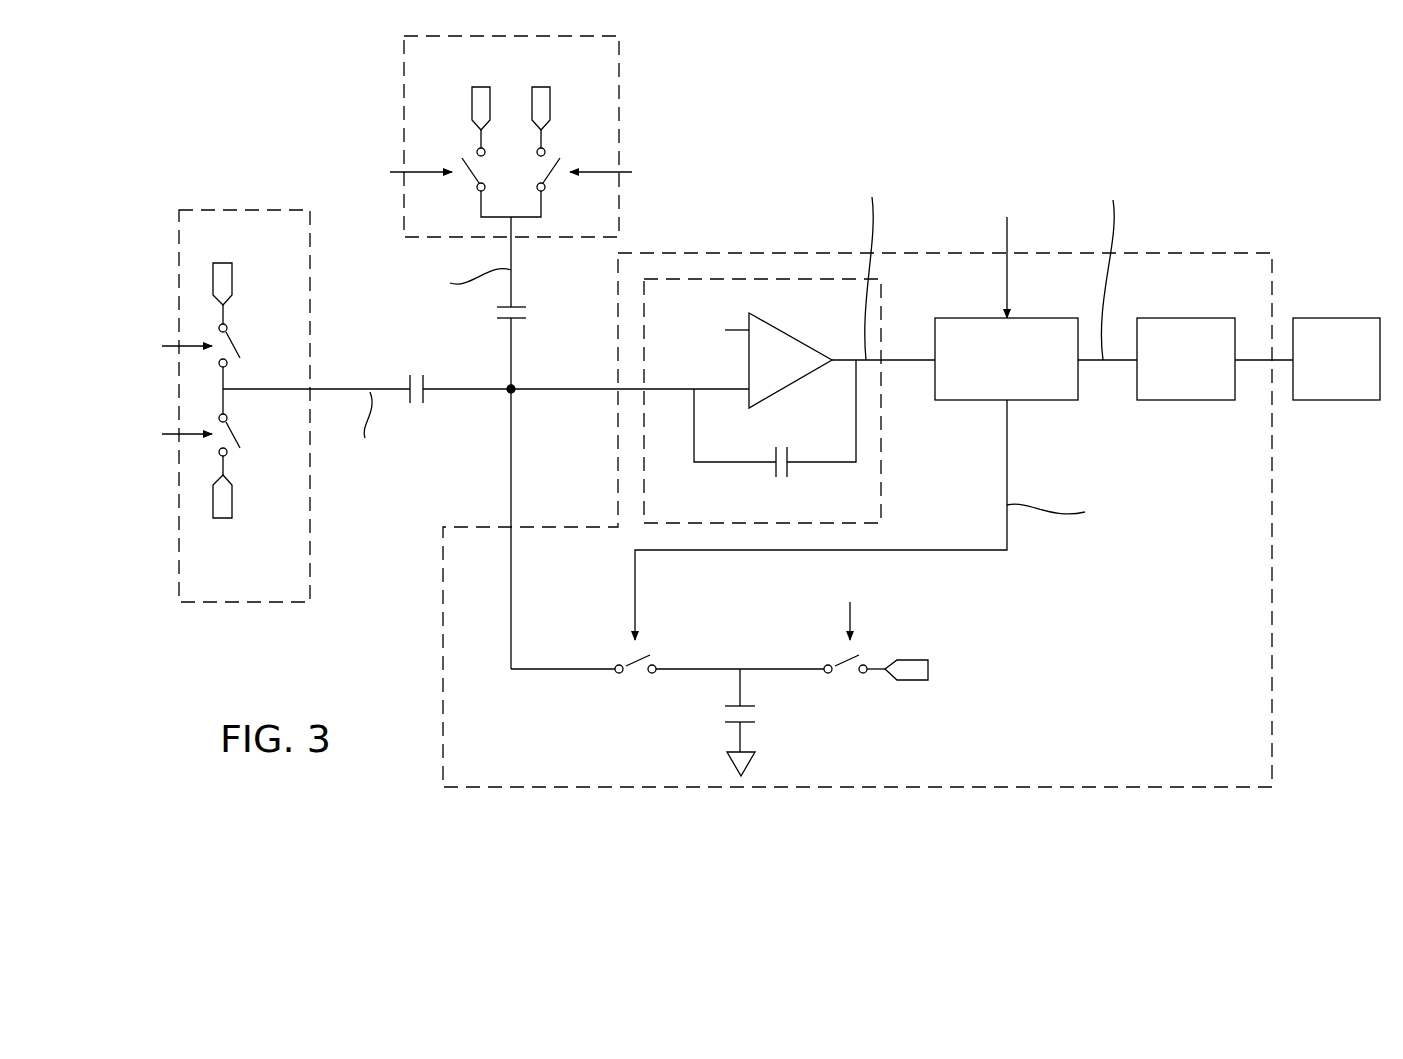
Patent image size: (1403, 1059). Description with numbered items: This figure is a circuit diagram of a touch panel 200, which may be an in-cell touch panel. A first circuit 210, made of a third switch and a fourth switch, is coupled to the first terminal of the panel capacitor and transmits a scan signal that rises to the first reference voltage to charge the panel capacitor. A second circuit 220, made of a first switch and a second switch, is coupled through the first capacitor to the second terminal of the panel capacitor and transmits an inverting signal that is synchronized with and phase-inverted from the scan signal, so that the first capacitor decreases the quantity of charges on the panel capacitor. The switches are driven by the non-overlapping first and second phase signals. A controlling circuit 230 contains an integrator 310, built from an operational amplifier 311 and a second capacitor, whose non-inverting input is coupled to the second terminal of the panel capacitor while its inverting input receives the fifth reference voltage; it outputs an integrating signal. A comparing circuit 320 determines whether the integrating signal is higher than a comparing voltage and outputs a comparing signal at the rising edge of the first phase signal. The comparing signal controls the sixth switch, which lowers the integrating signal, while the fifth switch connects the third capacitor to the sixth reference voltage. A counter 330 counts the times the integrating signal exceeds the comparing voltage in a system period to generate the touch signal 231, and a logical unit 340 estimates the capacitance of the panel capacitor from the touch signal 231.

The touch panel 200 is at (1187, 107).
The first circuit 210 is at (258, 210).
The second circuit 220 is at (619, 50).
The controlling circuit 230 is at (937, 253).
The touch signal 231 is at (1253, 360).
The integrator 310 is at (762, 338).
The operational amplifier 311 is at (796, 340).
The comparing circuit 320 is at (1048, 400).
The counter 330 is at (1185, 318).
The logical unit 340 is at (1335, 318).